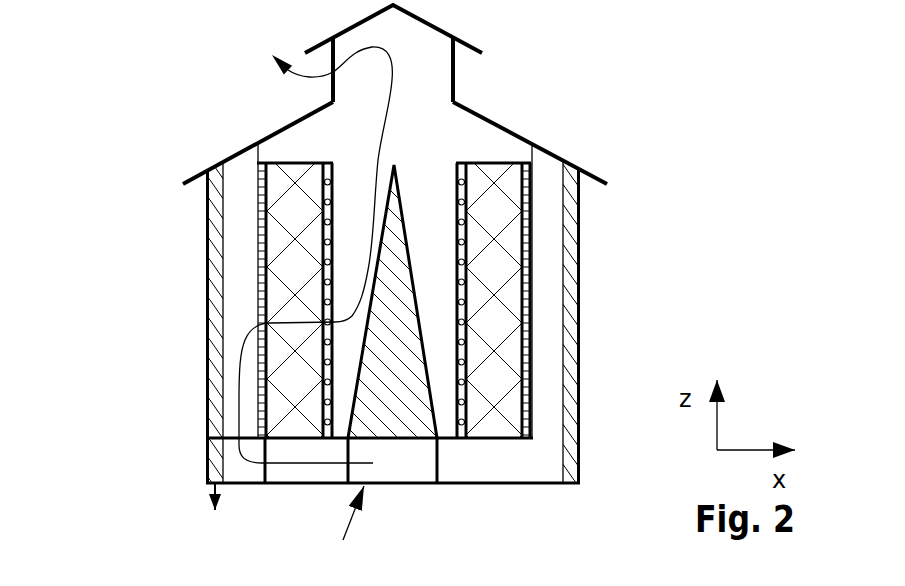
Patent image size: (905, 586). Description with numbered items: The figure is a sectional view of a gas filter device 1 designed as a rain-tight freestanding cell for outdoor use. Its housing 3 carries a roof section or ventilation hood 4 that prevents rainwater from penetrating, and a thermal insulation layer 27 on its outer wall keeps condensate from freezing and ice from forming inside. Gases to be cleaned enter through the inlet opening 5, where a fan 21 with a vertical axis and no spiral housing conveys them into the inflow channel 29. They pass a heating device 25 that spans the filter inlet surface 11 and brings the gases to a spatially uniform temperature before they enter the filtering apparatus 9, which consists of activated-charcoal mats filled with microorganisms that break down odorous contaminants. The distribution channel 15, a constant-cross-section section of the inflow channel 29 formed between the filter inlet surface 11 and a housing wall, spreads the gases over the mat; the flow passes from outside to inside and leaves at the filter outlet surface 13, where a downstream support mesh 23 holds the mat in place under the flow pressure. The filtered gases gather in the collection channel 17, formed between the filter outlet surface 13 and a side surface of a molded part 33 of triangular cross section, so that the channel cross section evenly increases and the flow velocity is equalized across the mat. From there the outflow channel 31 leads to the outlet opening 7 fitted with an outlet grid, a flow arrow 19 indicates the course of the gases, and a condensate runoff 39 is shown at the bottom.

The gas filter device 1 is at (175, 75).
The housing 3 is at (580, 212).
The ventilation hood 4 is at (445, 32).
The inlet opening 5 is at (344, 528).
The outlet opening 7 is at (333, 73).
The filtering apparatus 9 is at (502, 418).
The filter inlet surface 11 is at (258, 287).
The filter outlet surface 13 is at (326, 185).
The distribution channel 15 is at (238, 323).
The collection channel 17 is at (430, 285).
The flow arrow 19 is at (237, 398).
The fan 21 is at (392, 470).
The support mesh 23 is at (480, 162).
The heating device 25 is at (260, 265).
The thermal insulation 27 is at (570, 318).
The inflow channel 29 is at (310, 475).
The outflow channel 31 is at (363, 100).
The molded part 33 is at (415, 428).
The condensate runoff 39 is at (213, 493).